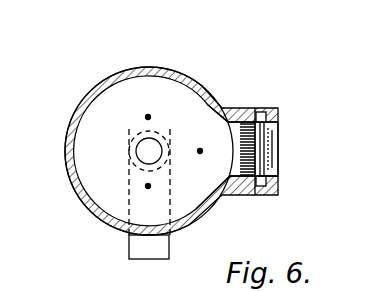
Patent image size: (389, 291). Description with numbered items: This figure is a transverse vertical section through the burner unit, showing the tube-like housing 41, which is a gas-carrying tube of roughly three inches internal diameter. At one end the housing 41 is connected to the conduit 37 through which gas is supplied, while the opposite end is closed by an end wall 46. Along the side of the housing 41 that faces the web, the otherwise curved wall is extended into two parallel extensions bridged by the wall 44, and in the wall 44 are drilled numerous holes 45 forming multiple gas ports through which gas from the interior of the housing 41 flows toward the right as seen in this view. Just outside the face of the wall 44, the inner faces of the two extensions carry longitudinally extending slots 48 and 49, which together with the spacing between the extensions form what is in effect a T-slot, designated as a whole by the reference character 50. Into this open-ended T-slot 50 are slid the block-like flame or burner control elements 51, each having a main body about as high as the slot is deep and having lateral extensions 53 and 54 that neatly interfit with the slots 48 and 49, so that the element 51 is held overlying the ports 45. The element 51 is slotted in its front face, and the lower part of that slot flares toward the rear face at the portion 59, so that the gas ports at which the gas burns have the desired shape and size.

The housing 41 is at (108, 68).
The end wall 46 is at (95, 153).
The wall 44 is at (240, 122).
The holes 45 is at (240, 153).
The slot 48 is at (276, 120).
The lateral extension 54 is at (259, 120).
The lateral extension 53 is at (256, 190).
The flame or burner control element 51 is at (282, 152).
The flared portion of slot 59 is at (263, 146).
The T-slot 50 is at (275, 168).
The slot 49 is at (280, 190).
The conduit 37 is at (169, 247).